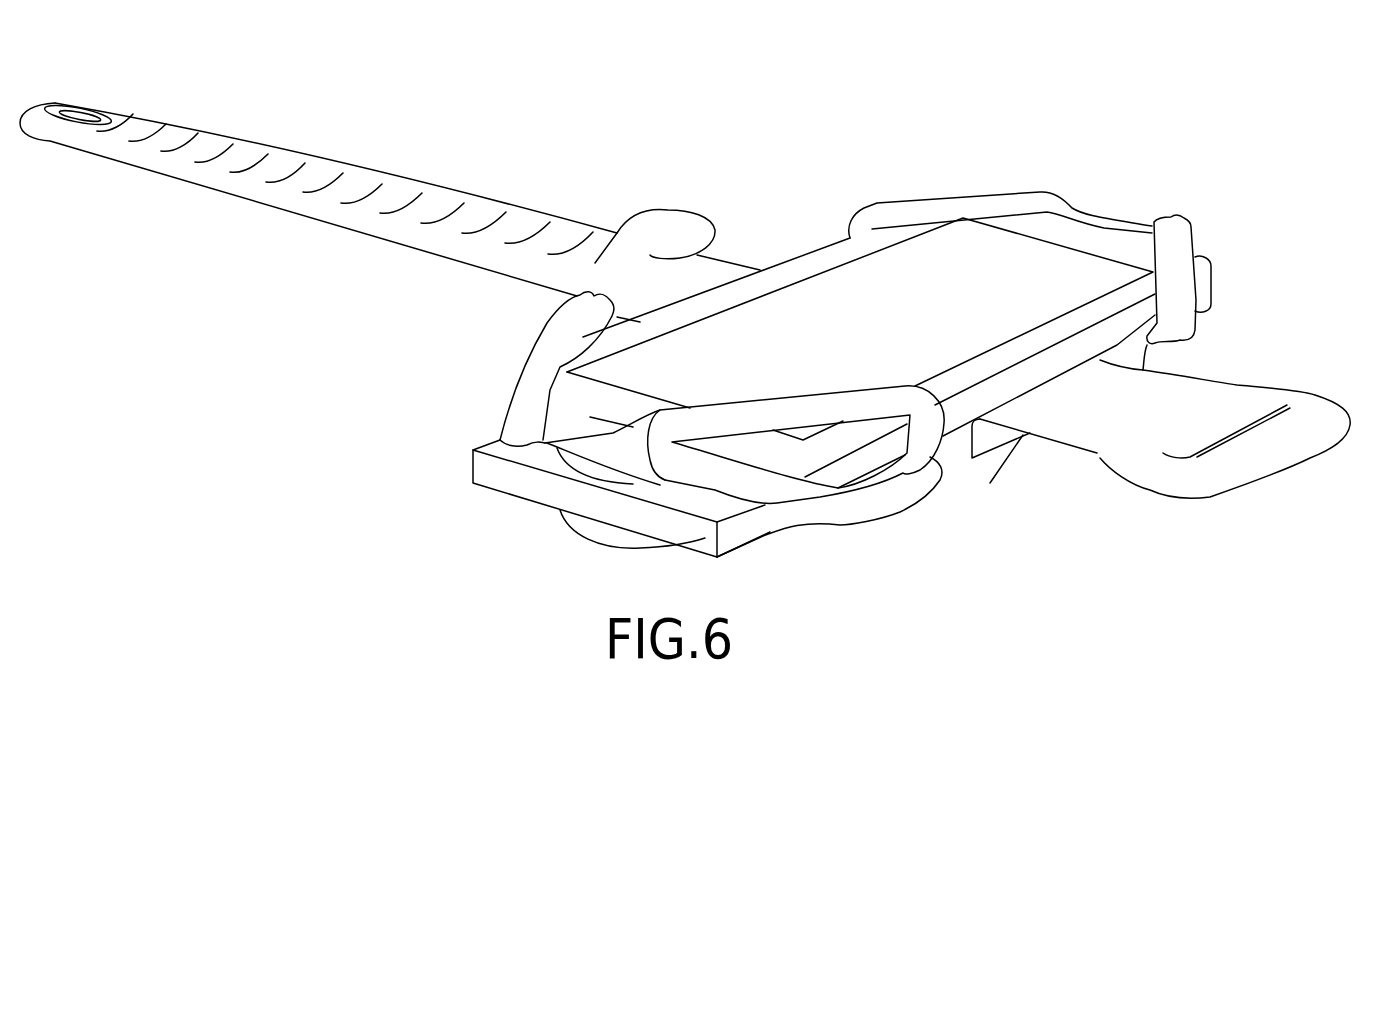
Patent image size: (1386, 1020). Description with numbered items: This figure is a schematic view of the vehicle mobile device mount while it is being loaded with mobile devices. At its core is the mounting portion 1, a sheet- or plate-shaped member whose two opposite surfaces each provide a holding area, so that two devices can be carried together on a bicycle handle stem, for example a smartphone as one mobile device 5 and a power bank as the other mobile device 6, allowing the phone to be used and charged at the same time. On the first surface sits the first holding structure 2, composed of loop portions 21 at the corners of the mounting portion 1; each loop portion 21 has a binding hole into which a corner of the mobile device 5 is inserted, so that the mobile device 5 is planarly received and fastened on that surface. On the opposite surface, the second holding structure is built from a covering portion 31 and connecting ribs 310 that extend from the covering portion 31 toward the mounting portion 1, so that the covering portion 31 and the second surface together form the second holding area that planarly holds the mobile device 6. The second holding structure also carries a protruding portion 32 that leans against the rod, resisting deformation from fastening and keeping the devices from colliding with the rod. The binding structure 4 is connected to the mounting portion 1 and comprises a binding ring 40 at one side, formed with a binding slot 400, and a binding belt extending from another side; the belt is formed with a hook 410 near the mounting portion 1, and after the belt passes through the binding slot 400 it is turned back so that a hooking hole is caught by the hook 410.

The mounting portion 1 is at (580, 460).
The first holding structure 2 is at (1182, 218).
The binding structure 4 is at (358, 163).
The mobile device 5 is at (810, 260).
The mobile device 6 is at (485, 467).
The loop portion 21 is at (1003, 202).
The covering portion 31 is at (837, 513).
The protruding portion 32 is at (962, 495).
The binding ring 40 is at (1280, 447).
The connecting rib 310 is at (957, 468).
The binding slot 400 is at (1243, 420).
The hook 410 is at (673, 218).